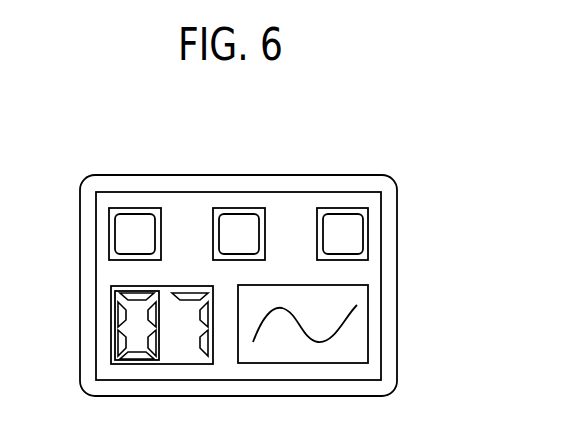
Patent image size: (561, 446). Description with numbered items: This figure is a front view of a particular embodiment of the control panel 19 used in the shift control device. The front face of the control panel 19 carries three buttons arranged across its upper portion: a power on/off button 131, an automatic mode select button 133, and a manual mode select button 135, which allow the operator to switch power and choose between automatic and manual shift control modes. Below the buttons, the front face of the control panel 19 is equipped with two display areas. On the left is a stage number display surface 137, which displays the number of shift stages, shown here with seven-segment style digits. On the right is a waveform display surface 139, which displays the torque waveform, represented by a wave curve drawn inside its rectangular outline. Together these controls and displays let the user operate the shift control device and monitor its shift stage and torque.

The control panel 19 is at (294, 154).
The power on/off button 131 is at (138, 222).
The automatic mode select button 133 is at (240, 222).
The manual mode select button 135 is at (340, 222).
The stage number display surface 137 is at (173, 355).
The waveform display surface 139 is at (298, 355).